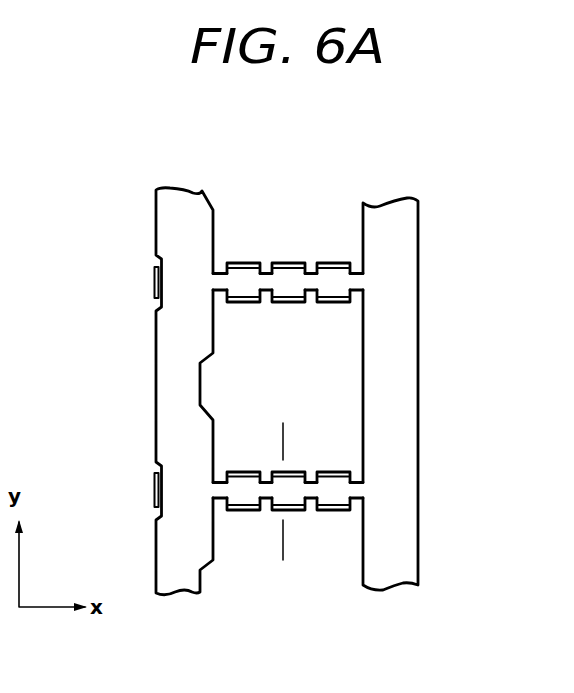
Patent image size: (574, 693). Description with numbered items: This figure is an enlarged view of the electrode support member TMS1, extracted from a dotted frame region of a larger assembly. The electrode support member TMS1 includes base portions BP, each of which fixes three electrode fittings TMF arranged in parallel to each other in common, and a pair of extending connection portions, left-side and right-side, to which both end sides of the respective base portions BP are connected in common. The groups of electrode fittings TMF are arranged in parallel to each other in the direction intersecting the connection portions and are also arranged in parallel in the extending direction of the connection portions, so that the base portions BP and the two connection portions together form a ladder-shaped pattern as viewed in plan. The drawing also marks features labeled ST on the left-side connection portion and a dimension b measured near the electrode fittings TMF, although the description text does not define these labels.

The electrode support member TMS1 is at (147, 170).
The electrode fitting TMF is at (240, 262).
The slit ST is at (156, 276).
The base portion BP is at (345, 285).
The offset dimension b is at (291, 441).